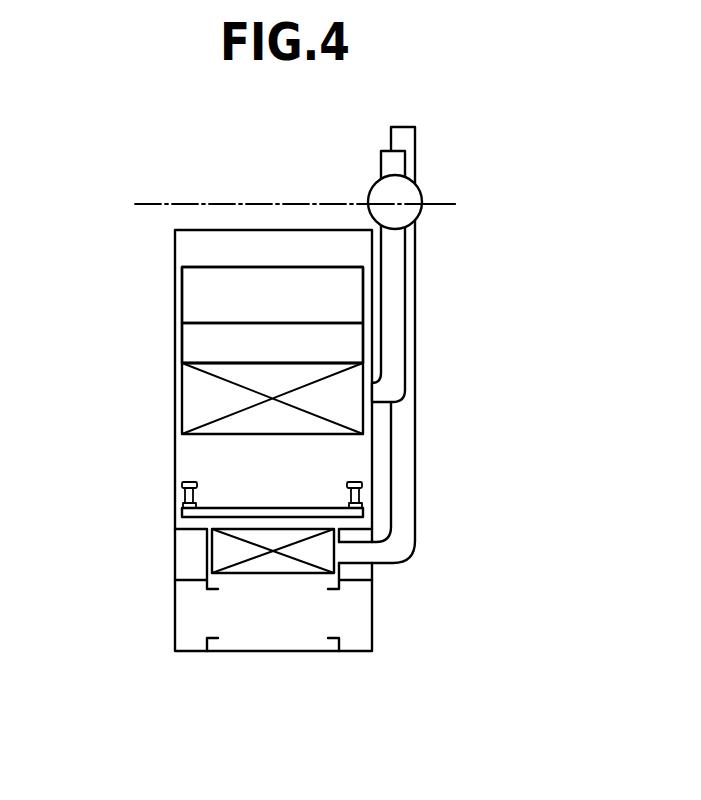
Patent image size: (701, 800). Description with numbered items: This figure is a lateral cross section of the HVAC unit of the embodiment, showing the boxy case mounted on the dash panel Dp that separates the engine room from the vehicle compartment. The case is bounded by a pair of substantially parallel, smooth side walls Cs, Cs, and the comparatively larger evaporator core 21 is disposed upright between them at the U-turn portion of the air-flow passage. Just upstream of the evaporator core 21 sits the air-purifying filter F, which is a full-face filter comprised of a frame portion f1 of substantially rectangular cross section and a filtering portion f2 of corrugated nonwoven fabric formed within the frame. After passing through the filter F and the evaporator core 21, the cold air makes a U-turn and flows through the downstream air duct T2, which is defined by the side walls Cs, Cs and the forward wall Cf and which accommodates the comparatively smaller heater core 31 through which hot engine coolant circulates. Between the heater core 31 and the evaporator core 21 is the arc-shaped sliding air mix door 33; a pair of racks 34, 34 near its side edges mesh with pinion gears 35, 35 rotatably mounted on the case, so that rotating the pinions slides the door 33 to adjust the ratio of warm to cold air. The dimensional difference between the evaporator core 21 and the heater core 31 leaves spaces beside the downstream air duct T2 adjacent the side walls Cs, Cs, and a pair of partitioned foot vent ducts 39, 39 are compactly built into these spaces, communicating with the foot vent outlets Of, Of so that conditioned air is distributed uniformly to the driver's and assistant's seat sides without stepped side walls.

The dash panel Dp is at (167, 204).
The side wall Cs is at (170, 245).
The air-purifying filter F is at (106, 270).
The frame portion f1 is at (197, 348).
The filtering portion f2 is at (197, 297).
The evaporator core 21 is at (197, 397).
The air mix door 33 is at (303, 508).
The rack 34 is at (180, 509).
The pinion gear 35 is at (182, 492).
The heater core 31 is at (212, 552).
The foot vent duct 39 is at (193, 613).
The downstream air duct T2 is at (277, 612).
The foot vent outlet Of is at (213, 612).
The forward wall Cf is at (280, 653).